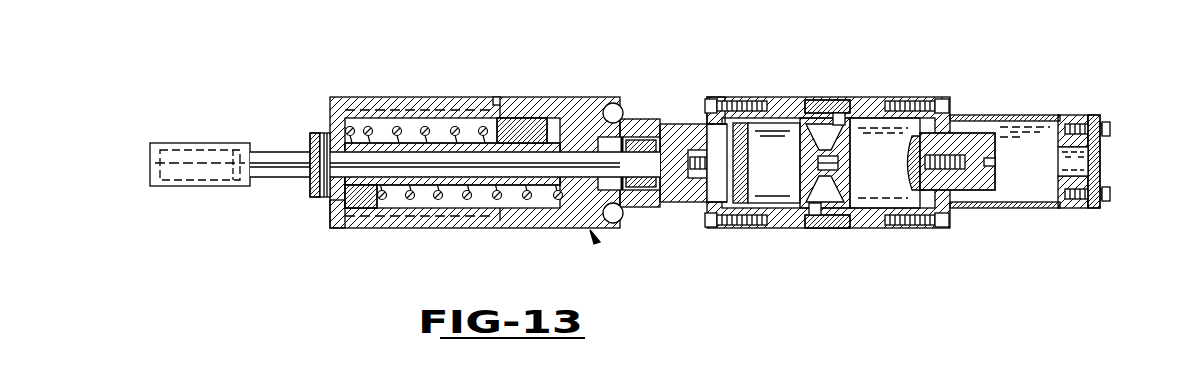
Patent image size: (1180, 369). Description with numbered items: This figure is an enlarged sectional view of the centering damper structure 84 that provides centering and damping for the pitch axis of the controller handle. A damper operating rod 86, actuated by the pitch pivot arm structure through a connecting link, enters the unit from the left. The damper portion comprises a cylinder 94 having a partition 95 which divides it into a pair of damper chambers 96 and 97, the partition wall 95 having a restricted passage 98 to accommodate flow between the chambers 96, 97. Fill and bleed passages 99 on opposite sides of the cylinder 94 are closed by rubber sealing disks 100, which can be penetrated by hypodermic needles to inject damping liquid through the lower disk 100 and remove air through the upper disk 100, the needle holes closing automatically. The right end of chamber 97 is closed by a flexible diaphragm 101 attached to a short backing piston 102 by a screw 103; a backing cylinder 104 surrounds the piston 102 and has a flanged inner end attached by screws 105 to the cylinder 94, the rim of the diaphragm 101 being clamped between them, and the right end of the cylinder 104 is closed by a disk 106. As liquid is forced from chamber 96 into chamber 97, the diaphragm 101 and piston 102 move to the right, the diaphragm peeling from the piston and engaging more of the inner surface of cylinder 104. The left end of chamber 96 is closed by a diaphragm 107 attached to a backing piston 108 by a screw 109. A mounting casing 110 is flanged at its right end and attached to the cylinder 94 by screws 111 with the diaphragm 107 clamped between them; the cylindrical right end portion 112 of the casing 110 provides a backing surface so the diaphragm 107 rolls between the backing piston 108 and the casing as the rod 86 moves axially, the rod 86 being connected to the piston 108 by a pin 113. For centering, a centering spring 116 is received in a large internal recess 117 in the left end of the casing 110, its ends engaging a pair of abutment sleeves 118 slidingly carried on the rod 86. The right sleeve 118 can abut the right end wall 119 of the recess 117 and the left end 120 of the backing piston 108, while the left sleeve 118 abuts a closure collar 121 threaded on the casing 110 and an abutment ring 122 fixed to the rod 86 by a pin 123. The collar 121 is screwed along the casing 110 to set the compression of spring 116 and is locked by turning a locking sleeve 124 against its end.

The centering damper structure 84 is at (1046, 92).
The damper operating rod 86 is at (276, 178).
The cylinder 94 is at (878, 98).
The partition 95 is at (847, 178).
The damper chamber 96 is at (786, 206).
The damper chamber 97 is at (882, 210).
The restricted passage 98 is at (840, 166).
The fill and bleed passages 99 is at (842, 112).
The rubber sealing disk 100 is at (828, 111).
The flexible diaphragm 101 is at (973, 210).
The backing piston 102 is at (997, 182).
The screw 103 is at (912, 152).
The backing cylinder 104 is at (1043, 210).
The screws 105 is at (944, 99).
The disk 106 is at (1102, 160).
The diaphragm 107 is at (693, 204).
The backing piston 108 is at (675, 123).
The screw 109 is at (746, 170).
The mounting casing 110 is at (592, 233).
The screws 111 is at (714, 229).
The right end portion of casing 112 is at (700, 118).
The pin 113 is at (638, 120).
The centering spring 116 is at (504, 205).
The internal recess 117 is at (462, 127).
The abutment sleeves 118 is at (538, 119).
The right end wall 119 is at (588, 204).
The left end of backing piston 120 is at (568, 200).
The closure collar 121 is at (331, 219).
The abutment ring 122 is at (312, 136).
The pin 123 is at (325, 131).
The locking sleeve 124 is at (446, 229).